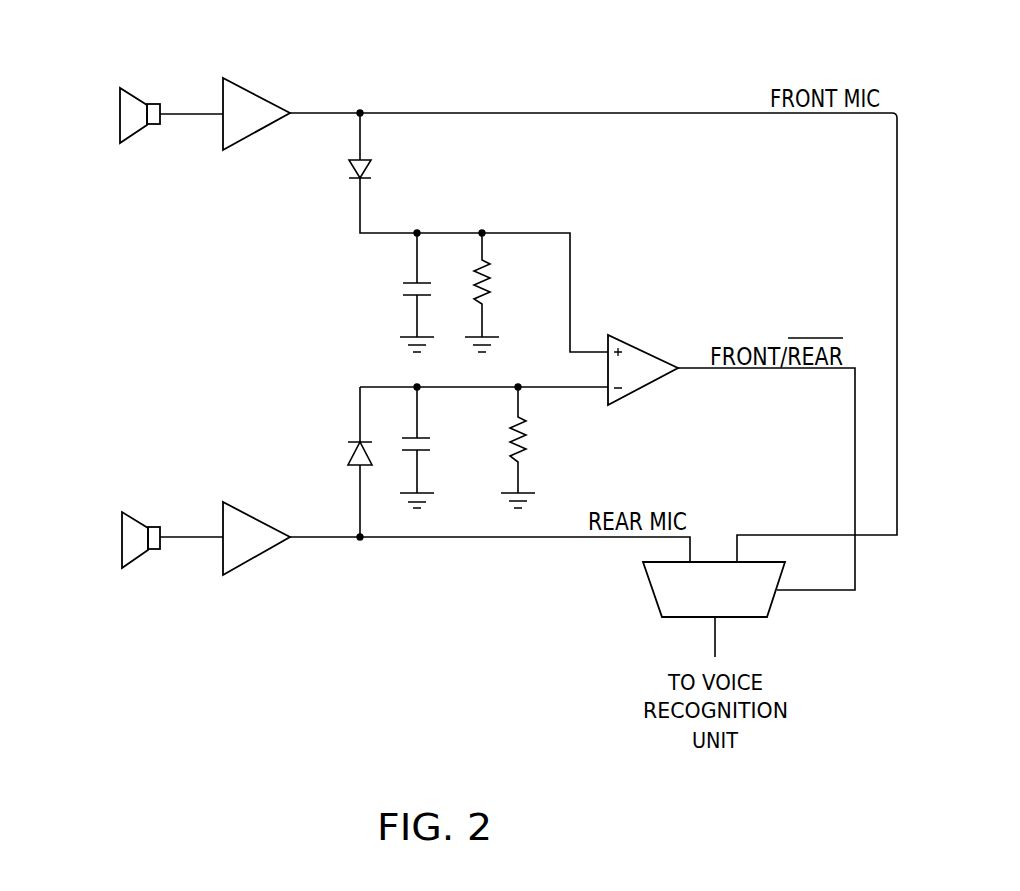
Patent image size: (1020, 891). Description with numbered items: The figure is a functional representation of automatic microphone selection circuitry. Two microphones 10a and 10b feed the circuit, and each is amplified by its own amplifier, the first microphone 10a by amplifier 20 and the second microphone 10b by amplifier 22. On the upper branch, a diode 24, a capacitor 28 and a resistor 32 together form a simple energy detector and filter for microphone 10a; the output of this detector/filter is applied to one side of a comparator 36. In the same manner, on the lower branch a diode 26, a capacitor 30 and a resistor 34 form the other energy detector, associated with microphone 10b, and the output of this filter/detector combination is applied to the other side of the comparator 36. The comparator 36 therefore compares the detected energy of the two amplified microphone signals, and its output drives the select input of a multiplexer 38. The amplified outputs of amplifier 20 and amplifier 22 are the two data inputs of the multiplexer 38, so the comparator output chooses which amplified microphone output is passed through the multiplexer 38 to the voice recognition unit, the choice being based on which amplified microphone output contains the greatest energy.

The microphone 10a is at (120, 100).
The microphone 10b is at (122, 539).
The amplifier 20 is at (243, 82).
The amplifier 22 is at (247, 565).
The diode 24 is at (368, 167).
The diode 26 is at (348, 452).
The capacitor 28 is at (402, 287).
The capacitor 30 is at (423, 445).
The resistor 32 is at (493, 277).
The resistor 34 is at (525, 435).
The comparator 36 is at (622, 338).
The multiplexer 38 is at (655, 598).